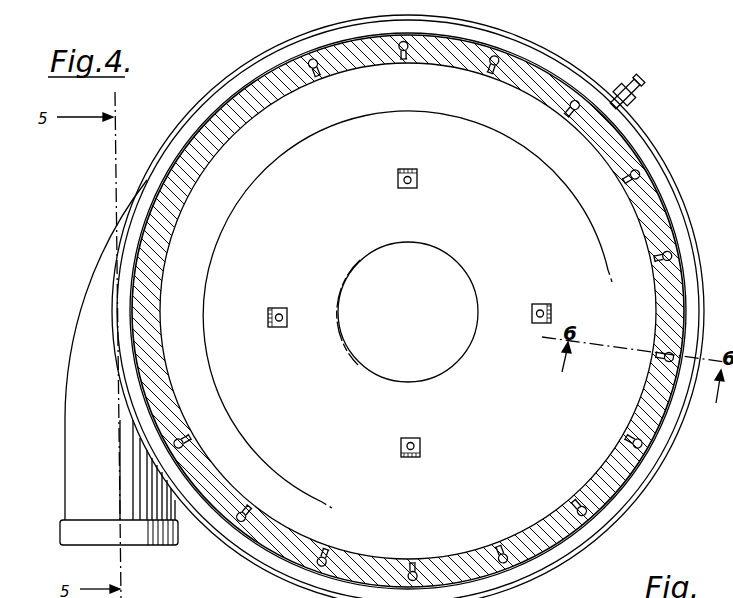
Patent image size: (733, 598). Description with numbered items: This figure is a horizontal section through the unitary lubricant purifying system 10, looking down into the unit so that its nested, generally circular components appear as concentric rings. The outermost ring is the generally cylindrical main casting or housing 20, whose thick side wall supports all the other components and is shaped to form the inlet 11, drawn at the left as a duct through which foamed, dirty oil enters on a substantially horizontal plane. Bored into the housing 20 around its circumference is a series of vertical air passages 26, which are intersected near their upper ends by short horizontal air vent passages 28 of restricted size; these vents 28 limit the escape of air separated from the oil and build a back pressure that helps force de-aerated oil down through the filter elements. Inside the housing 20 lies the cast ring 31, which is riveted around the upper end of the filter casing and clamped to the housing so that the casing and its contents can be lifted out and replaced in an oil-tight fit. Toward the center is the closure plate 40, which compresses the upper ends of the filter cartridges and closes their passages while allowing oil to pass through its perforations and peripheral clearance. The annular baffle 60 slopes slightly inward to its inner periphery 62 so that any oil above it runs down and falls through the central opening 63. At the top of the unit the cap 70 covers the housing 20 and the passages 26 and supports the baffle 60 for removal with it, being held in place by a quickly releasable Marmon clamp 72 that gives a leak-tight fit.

The lubricant purifying system 10 is at (664, 464).
The inlet 11 is at (147, 534).
The main casting or housing 20 is at (603, 507).
The vertical air passages 26 is at (633, 177).
The air vent passages 28 is at (490, 70).
The cast ring 31 is at (612, 414).
The closure plate 40 is at (440, 342).
The annular baffle 60 is at (500, 438).
The inner periphery 62 is at (447, 254).
The central opening 63 is at (473, 290).
The cap 70 is at (685, 285).
The Marmon clamp 72 is at (628, 84).